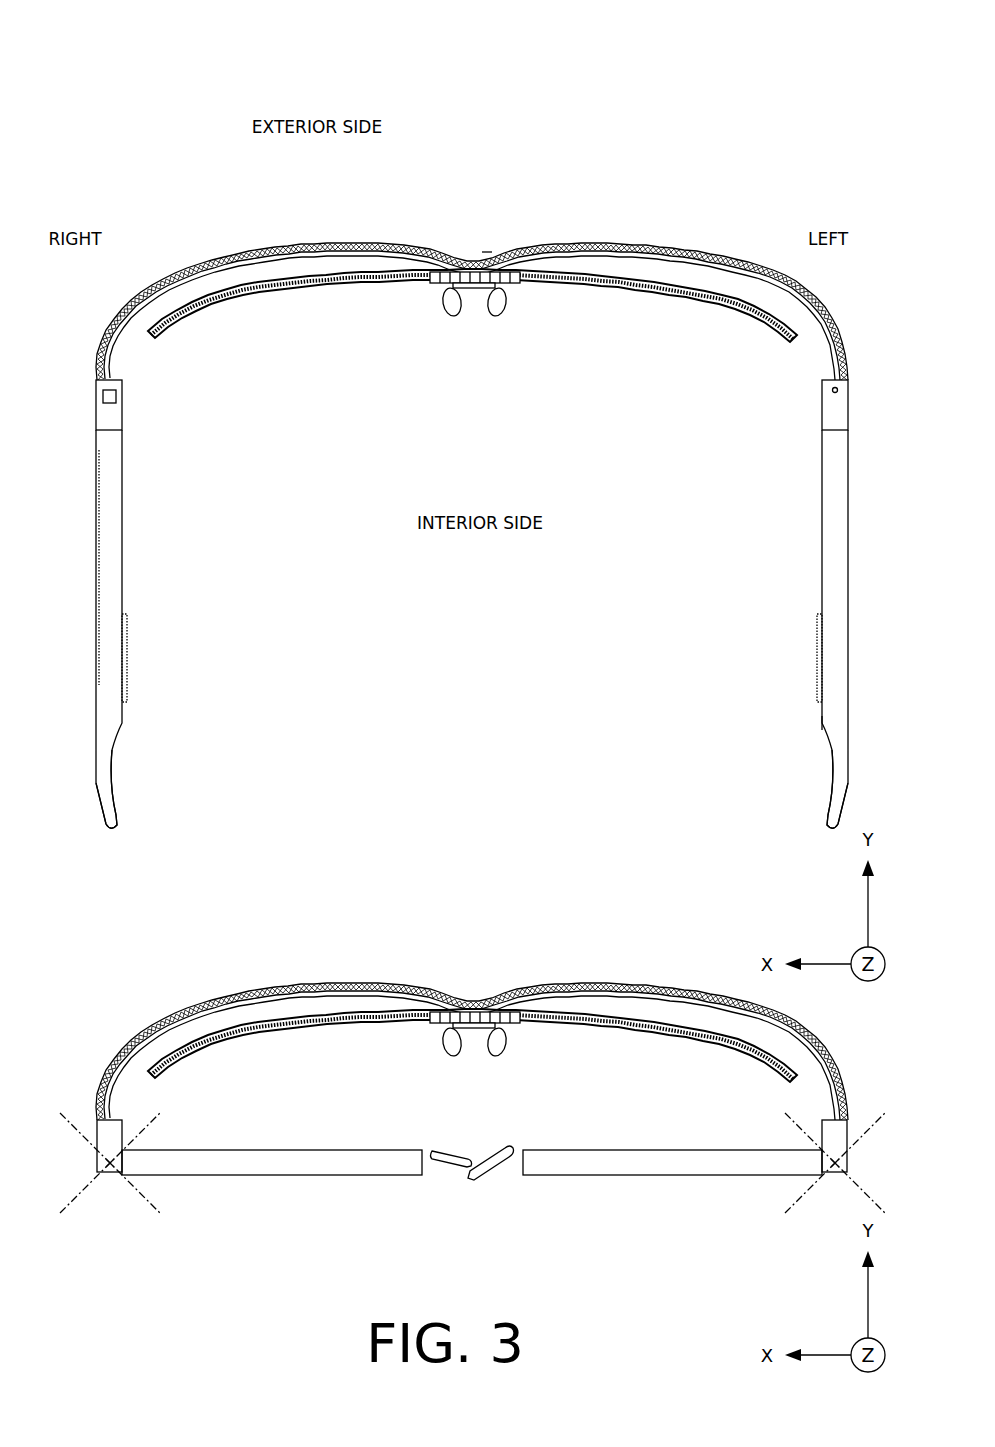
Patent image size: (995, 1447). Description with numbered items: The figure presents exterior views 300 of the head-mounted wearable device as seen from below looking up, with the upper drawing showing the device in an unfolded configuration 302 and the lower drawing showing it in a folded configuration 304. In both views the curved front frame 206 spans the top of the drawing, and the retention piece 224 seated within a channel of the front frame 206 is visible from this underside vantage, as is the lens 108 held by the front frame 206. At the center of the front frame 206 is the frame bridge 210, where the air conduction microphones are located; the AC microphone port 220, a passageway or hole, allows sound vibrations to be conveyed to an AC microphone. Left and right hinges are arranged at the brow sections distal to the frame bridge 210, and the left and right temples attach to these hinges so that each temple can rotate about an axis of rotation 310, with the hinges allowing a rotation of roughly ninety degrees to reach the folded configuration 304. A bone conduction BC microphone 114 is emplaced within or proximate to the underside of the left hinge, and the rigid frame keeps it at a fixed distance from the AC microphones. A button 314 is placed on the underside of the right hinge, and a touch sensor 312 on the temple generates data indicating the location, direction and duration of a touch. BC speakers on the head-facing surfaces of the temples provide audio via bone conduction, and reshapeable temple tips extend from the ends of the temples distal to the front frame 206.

The exterior views 300 is at (728, 40).
The unfolded configuration 302 is at (264, 78).
The folded configuration 304 is at (245, 958).
The front frame 206 is at (274, 248).
The frame bridge 210 is at (403, 172).
The retention piece 224 is at (629, 262).
The lens 108 is at (272, 297).
The AC microphone port 220 is at (832, 391).
The button 314 is at (112, 395).
The touch sensor 312 is at (98, 526).
The BC microphone 114 is at (822, 723).
The axis of rotation 310 is at (823, 1177).